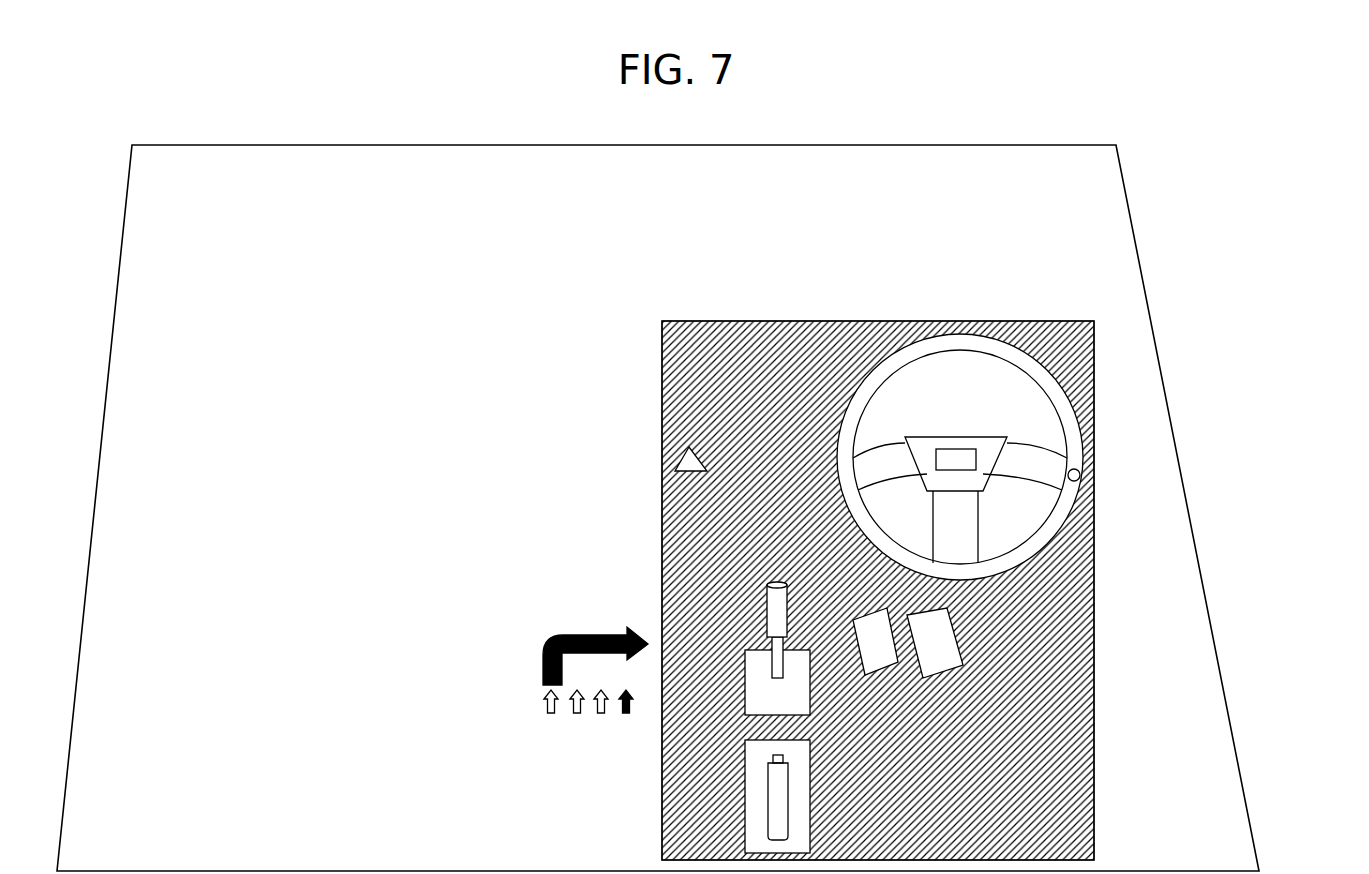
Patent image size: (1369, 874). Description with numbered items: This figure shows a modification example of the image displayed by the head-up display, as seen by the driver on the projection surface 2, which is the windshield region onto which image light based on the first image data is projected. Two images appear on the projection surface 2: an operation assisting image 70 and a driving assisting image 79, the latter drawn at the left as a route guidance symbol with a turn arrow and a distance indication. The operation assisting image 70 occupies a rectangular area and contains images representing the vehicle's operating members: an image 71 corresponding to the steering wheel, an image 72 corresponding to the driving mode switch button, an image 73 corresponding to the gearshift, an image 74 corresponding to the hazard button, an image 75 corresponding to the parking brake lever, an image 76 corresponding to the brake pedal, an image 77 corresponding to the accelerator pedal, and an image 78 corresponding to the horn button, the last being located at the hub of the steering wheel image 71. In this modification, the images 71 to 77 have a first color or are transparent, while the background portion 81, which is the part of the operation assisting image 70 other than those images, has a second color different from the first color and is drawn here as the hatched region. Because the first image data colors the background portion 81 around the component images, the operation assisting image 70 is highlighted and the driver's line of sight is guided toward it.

The projection surface 2 is at (1155, 343).
The operation assisting image 70 is at (815, 321).
The image corresponding to the steering wheel 71 is at (1094, 400).
The image corresponding to the driving mode switch button 72 is at (1080, 474).
The image corresponding to the gearshift 73 is at (767, 612).
The image corresponding to the hazard button 74 is at (675, 458).
The image corresponding to the parking brake lever 75 is at (745, 825).
The image corresponding to the brake pedal 76 is at (885, 672).
The image corresponding to the accelerator pedal 77 is at (963, 637).
The image corresponding to the horn button 78 is at (956, 458).
The driving assisting image 79 is at (555, 765).
The background portion 81 is at (710, 322).